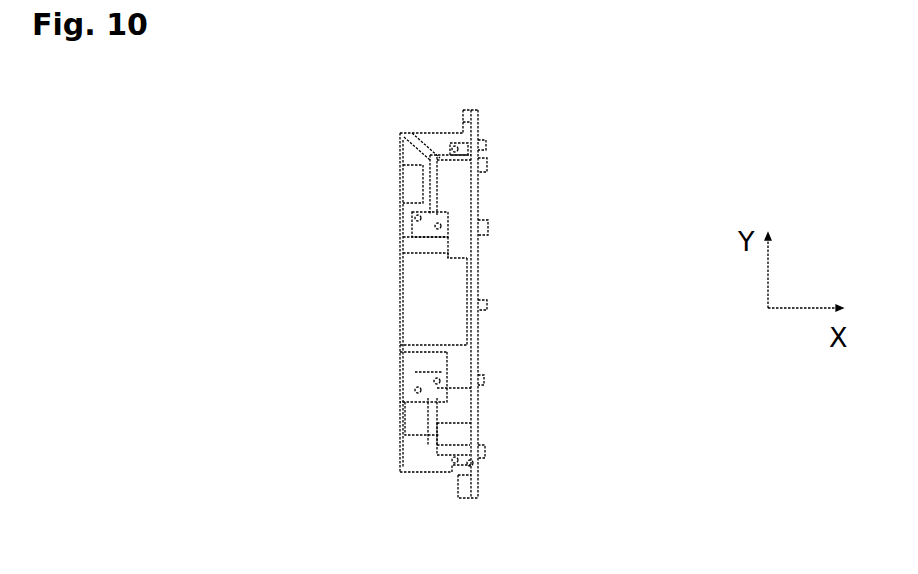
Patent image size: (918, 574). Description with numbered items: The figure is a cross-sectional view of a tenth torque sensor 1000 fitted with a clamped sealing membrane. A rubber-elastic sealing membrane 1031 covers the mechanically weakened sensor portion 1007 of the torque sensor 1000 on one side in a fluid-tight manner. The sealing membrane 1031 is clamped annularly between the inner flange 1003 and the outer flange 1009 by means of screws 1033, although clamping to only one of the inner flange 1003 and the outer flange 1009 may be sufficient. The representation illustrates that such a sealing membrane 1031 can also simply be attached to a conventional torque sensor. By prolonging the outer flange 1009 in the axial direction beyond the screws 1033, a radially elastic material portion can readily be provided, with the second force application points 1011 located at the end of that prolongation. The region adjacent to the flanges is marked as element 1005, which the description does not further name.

The tenth torque sensor 1000 is at (714, 82).
The inner flange 1003 is at (395, 351).
The bracket body 1005 is at (398, 368).
The mechanically weakened sensor portion 1007 is at (396, 416).
The outer flange 1009 is at (395, 453).
The second force application points 1011 is at (480, 496).
The rubber-elastic sealing membrane 1031 is at (480, 424).
The screws 1033 is at (490, 378).